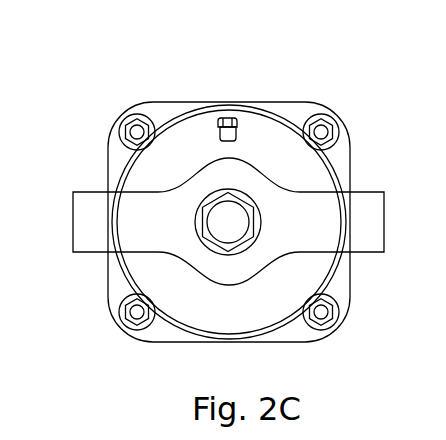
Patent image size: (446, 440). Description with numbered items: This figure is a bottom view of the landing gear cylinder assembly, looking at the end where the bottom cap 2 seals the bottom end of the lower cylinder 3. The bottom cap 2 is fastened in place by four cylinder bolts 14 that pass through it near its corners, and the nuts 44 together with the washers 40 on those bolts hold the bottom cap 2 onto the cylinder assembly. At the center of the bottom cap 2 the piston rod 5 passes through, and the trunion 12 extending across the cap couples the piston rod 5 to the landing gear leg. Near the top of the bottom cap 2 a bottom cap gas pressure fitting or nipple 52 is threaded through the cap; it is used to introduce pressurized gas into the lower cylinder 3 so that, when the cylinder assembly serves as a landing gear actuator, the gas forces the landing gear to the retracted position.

The bottom cap 2 is at (184, 102).
The lower cylinder 3 is at (345, 178).
The piston rod 5 is at (250, 235).
The trunion 12 is at (73, 192).
The cylinder bolts 14 is at (121, 136).
The washers 40 is at (137, 115).
The nuts 44 is at (125, 118).
The bottom cap gas pressure fitting or nipple 52 is at (229, 118).